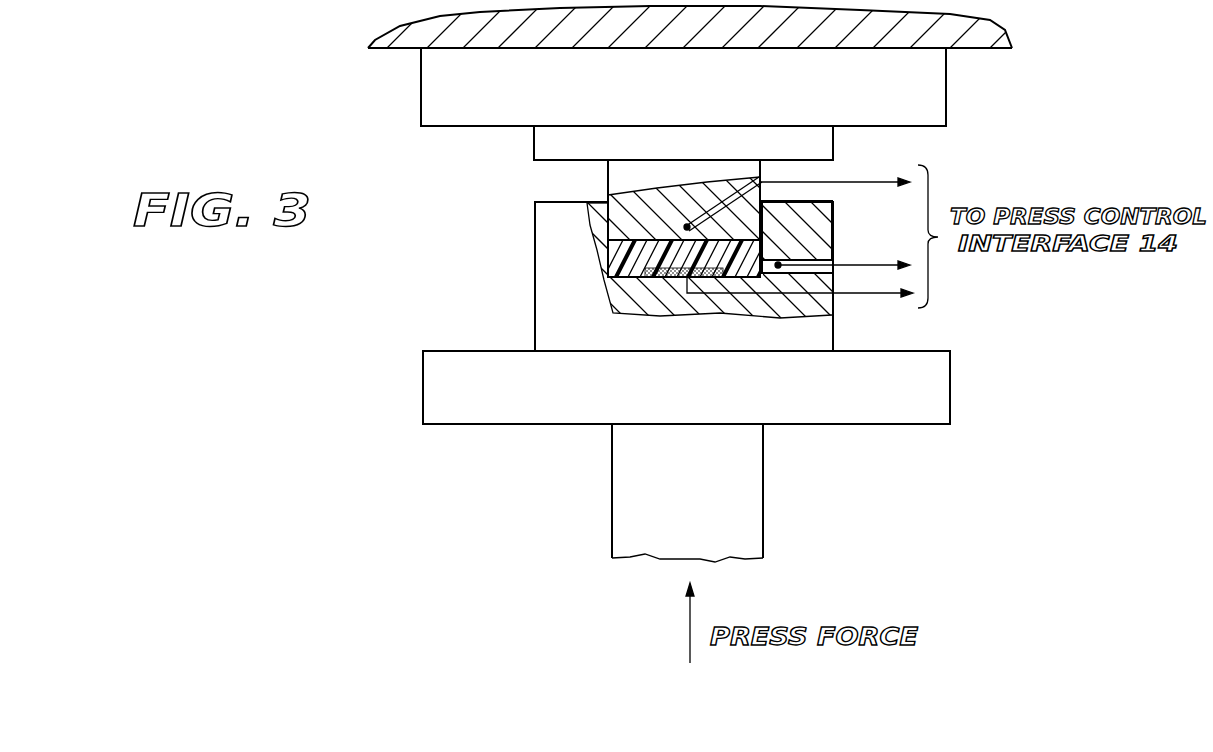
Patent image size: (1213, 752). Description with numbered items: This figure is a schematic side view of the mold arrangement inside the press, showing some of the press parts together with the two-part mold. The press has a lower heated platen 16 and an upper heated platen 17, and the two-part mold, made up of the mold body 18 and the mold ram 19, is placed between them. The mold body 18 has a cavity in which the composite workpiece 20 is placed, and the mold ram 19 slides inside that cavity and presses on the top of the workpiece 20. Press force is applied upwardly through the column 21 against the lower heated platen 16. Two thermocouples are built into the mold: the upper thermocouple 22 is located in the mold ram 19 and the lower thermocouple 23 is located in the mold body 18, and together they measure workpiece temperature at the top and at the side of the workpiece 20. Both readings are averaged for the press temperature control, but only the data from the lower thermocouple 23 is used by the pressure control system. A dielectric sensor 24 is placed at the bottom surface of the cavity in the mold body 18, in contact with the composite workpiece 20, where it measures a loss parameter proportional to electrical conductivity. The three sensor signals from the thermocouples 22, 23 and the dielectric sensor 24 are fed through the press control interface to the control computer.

The lower heated platen 16 is at (445, 377).
The upper heated platen 17 is at (440, 86).
The mold body 18 is at (567, 313).
The mold ram 19 is at (550, 142).
The composite workpiece 20 is at (623, 260).
The column 21 is at (767, 490).
The upper thermocouple 22 is at (687, 227).
The lower thermocouple 23 is at (778, 265).
The dielectric sensor 24 is at (663, 280).